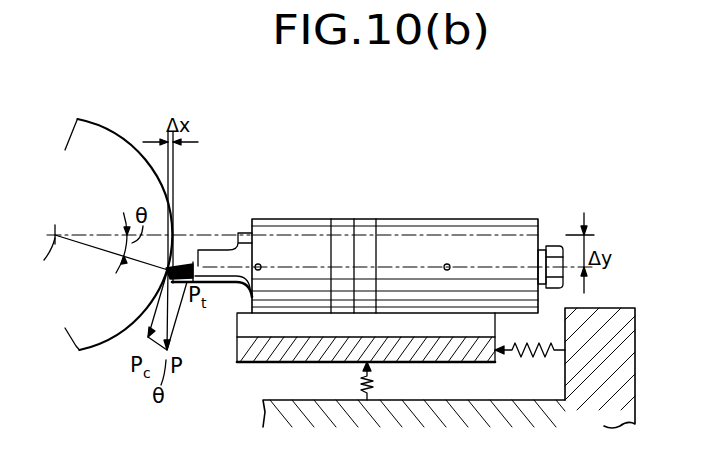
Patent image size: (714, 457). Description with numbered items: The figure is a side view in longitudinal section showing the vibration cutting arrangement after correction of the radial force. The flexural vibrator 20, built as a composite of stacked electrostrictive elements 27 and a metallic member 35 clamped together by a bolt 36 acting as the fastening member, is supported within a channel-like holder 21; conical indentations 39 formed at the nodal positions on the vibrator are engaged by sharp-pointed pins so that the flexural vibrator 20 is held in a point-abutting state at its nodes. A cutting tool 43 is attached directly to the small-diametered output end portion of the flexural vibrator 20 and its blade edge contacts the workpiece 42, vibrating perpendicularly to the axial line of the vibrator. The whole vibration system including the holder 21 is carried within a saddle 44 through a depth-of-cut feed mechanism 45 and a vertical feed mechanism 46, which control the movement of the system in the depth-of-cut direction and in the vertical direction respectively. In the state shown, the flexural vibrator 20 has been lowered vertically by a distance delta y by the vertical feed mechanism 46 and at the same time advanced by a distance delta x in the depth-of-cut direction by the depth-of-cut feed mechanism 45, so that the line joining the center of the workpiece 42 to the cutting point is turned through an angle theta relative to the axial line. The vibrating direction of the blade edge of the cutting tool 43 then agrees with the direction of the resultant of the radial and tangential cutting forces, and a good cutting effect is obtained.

The flexural vibrator 20 is at (502, 230).
The holder 21 is at (298, 350).
The electrostrictive element 27 is at (365, 245).
The metallic member 35 is at (404, 228).
The bolt 36 is at (554, 248).
The conical indentations 39 is at (262, 264).
The workpiece 42 is at (104, 335).
The cutting tool 43 is at (180, 262).
The saddle 44 is at (622, 322).
The depth-of-cut feed mechanism 45 is at (531, 357).
The vertical feed mechanism 46 is at (374, 383).